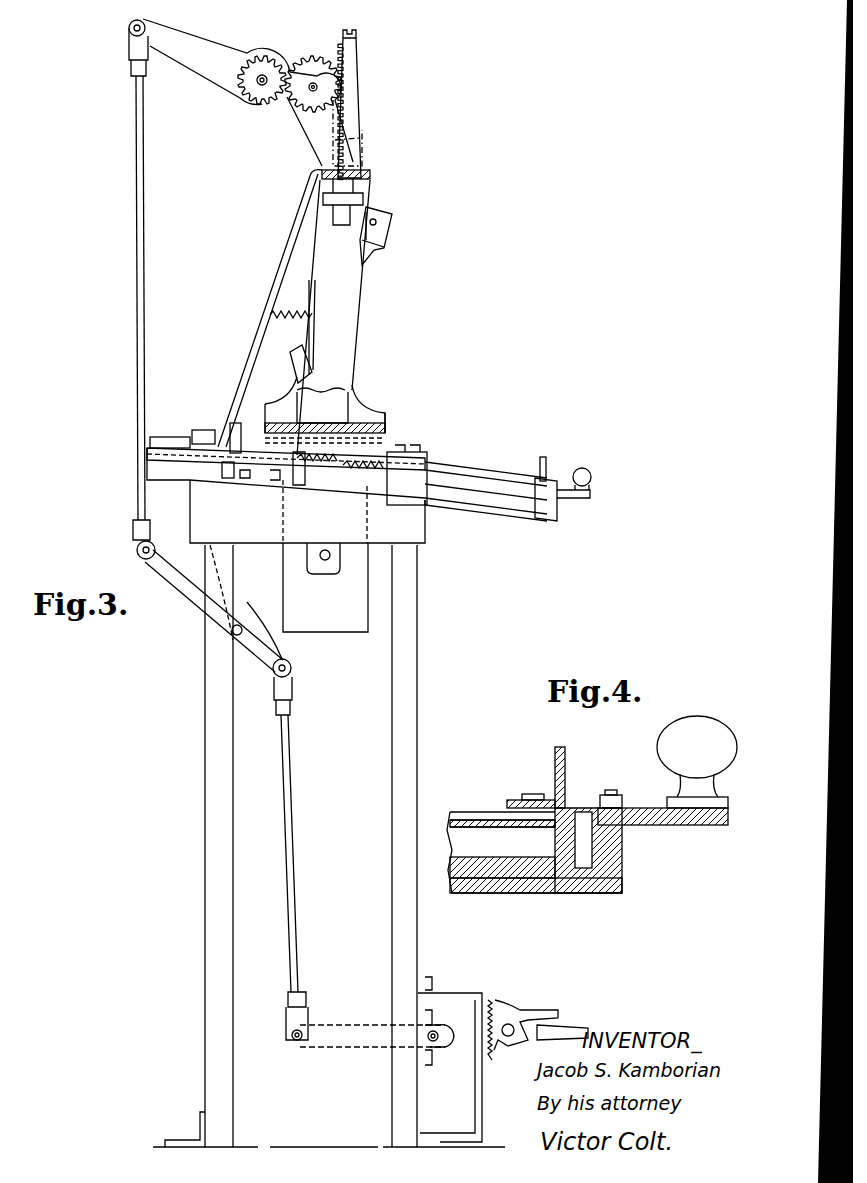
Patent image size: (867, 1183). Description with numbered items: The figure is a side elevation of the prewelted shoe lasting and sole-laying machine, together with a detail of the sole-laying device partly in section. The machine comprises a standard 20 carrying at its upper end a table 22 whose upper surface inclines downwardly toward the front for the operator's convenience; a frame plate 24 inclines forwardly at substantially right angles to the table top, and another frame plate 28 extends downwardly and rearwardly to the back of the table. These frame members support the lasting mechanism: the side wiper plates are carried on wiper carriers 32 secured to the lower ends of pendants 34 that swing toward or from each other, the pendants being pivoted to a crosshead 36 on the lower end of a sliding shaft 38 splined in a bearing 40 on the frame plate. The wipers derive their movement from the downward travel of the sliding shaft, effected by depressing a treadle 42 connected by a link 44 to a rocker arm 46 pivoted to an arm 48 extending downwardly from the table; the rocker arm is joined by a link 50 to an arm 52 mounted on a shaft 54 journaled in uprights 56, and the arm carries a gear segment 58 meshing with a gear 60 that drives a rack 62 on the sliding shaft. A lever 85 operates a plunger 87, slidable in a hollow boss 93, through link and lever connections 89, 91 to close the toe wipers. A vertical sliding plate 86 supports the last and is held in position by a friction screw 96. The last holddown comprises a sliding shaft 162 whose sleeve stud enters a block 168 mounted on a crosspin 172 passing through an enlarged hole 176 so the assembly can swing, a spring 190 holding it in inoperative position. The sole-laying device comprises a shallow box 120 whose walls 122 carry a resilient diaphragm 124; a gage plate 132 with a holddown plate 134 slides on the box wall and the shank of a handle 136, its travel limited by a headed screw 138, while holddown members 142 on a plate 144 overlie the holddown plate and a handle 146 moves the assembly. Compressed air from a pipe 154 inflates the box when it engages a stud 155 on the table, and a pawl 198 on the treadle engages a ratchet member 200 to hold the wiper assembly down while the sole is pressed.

In FIG. 3, the standard 20 is at (206, 779).
In FIG. 3, the table 22 is at (307, 511).
In FIG. 3, the frame plate 24 is at (333, 317).
In FIG. 3, the frame plate 28 is at (252, 348).
In FIG. 3, the wiper carriers 32 is at (386, 420).
In FIG. 3, the pendants 34 is at (367, 392).
In FIG. 3, the crosshead 36 is at (343, 206).
In FIG. 3, the sliding shaft 38 is at (362, 98).
In FIG. 3, the bearing 40 is at (363, 147).
In FIG. 3, the treadle 42 is at (570, 1025).
In FIG. 3, the link 44 is at (297, 812).
In FIG. 3, the rocker arm 46 is at (188, 600).
In FIG. 3, the arm 48 is at (276, 652).
In FIG. 3, the link 50 is at (147, 285).
In FIG. 3, the arm 52 is at (182, 57).
In FIG. 3, the shaft 54 is at (262, 75).
In FIG. 3, the uprights 56 is at (306, 122).
In FIG. 3, the gear segment 58 is at (248, 108).
In FIG. 3, the gear 60 is at (314, 58).
In FIG. 3, the rack 62 is at (356, 34).
In FIG. 3, the lever 85 is at (428, 468).
In FIG. 3, the sliding plate 86 is at (325, 587).
In FIG. 3, the plunger 87 is at (240, 428).
In FIG. 3, the link and lever connections 89 is at (395, 456).
In FIG. 3, the link and lever connections 91 is at (166, 437).
In FIG. 3, the hollow boss 93 is at (213, 430).
In FIG. 3, the friction screw 96 is at (330, 560).
In FIG. 3, the box 120 is at (488, 512).
In FIG. 4, the box 120 is at (478, 860).
In FIG. 3, the walls 122 is at (400, 505).
In FIG. 3, the diaphragm 124 is at (480, 482).
In FIG. 4, the diaphragm 124 is at (455, 812).
In FIG. 4, the gage plate 132 is at (526, 794).
In FIG. 4, the holddown plate 134 is at (510, 800).
In FIG. 3, the handle 136 is at (592, 476).
In FIG. 4, the handle 136 is at (697, 762).
In FIG. 4, the headed screw 138 is at (612, 795).
In FIG. 3, the holddown members 142 is at (426, 504).
In FIG. 3, the plate 144 is at (557, 512).
In FIG. 4, the plate 144 is at (623, 868).
In FIG. 3, the handle 146 is at (546, 463).
In FIG. 4, the handle 146 is at (567, 772).
In FIG. 3, the pipe 154 is at (226, 480).
In FIG. 3, the stud 155 is at (245, 480).
In FIG. 3, the sliding shaft 162 is at (294, 360).
In FIG. 3, the block 168 is at (392, 216).
In FIG. 3, the crosspin 172 is at (376, 214).
In FIG. 3, the hole 176 is at (380, 240).
In FIG. 3, the spring 190 is at (296, 313).
In FIG. 3, the pawl 198 is at (494, 1002).
In FIG. 3, the ratchet member 200 is at (494, 1058).